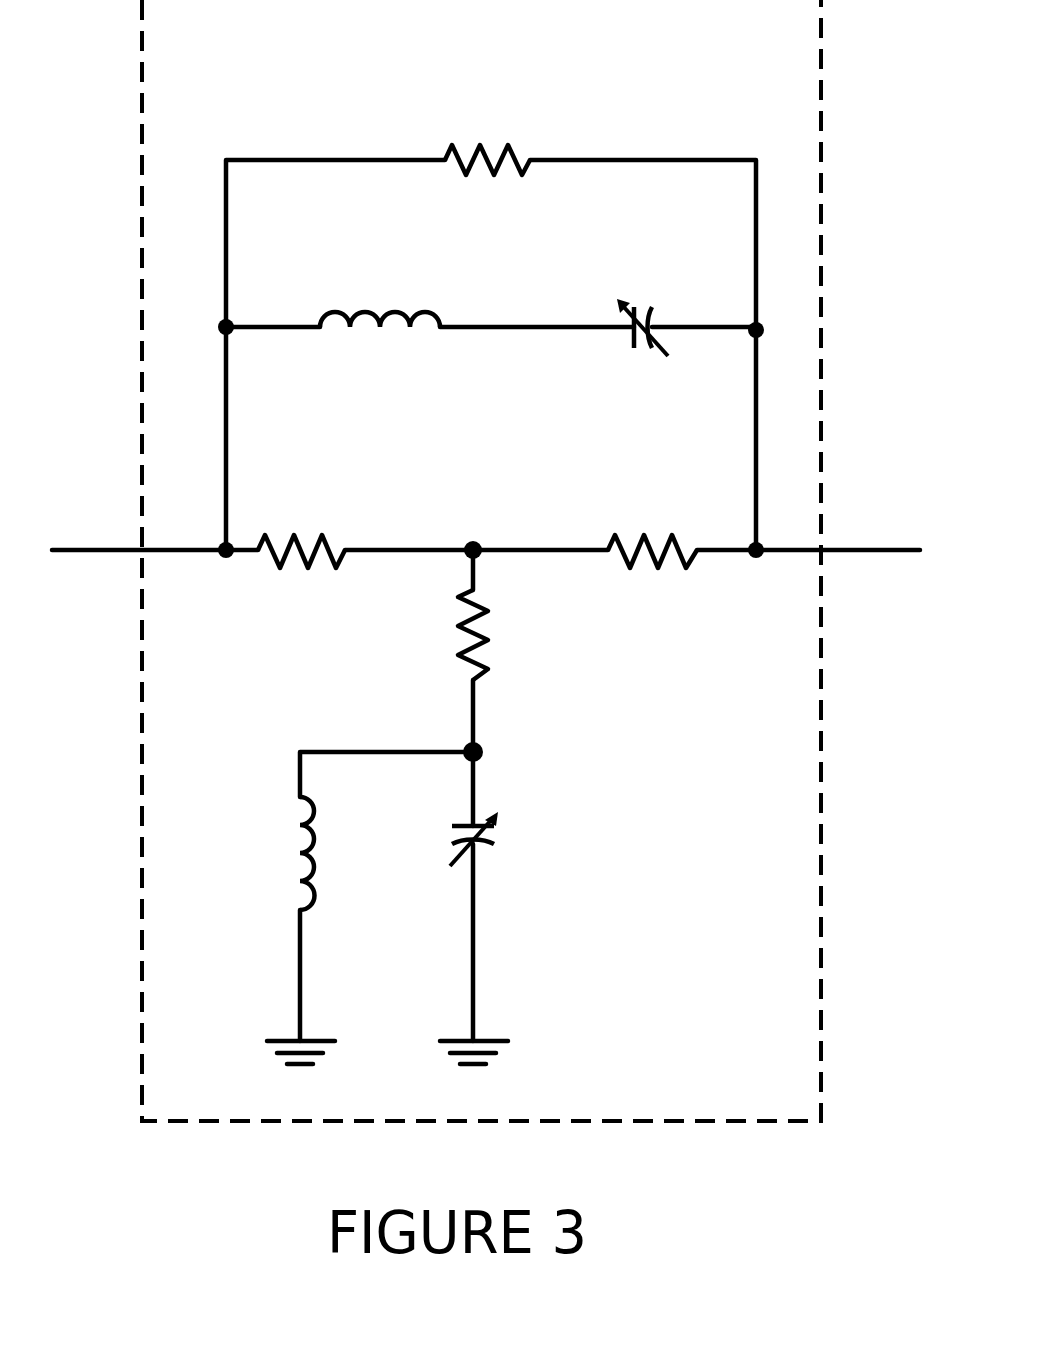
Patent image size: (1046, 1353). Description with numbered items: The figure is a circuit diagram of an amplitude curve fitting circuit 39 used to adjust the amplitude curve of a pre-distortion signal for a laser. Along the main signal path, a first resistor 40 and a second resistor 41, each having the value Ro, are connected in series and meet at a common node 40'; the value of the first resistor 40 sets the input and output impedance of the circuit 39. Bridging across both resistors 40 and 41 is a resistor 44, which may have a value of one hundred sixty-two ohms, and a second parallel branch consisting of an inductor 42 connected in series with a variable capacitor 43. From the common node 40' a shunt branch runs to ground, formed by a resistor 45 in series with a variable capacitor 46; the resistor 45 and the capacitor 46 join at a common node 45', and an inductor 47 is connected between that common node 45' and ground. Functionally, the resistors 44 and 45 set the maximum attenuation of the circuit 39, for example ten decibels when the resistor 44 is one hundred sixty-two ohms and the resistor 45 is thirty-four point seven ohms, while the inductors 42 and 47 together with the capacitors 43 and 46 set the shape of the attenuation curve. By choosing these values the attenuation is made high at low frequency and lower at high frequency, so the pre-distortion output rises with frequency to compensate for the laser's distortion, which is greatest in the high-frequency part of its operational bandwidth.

The amplitude curve fitting circuit 39 is at (826, 102).
The first resistor 40 is at (342, 551).
The common node 40' is at (501, 518).
The second resistor 41 is at (650, 572).
The inductor 42 is at (453, 286).
The variable capacitor 43 is at (634, 336).
The resistor 44 is at (510, 145).
The resistor 45 is at (481, 660).
The common node 45' is at (516, 778).
The variable capacitor 46 is at (478, 852).
The inductor 47 is at (312, 808).